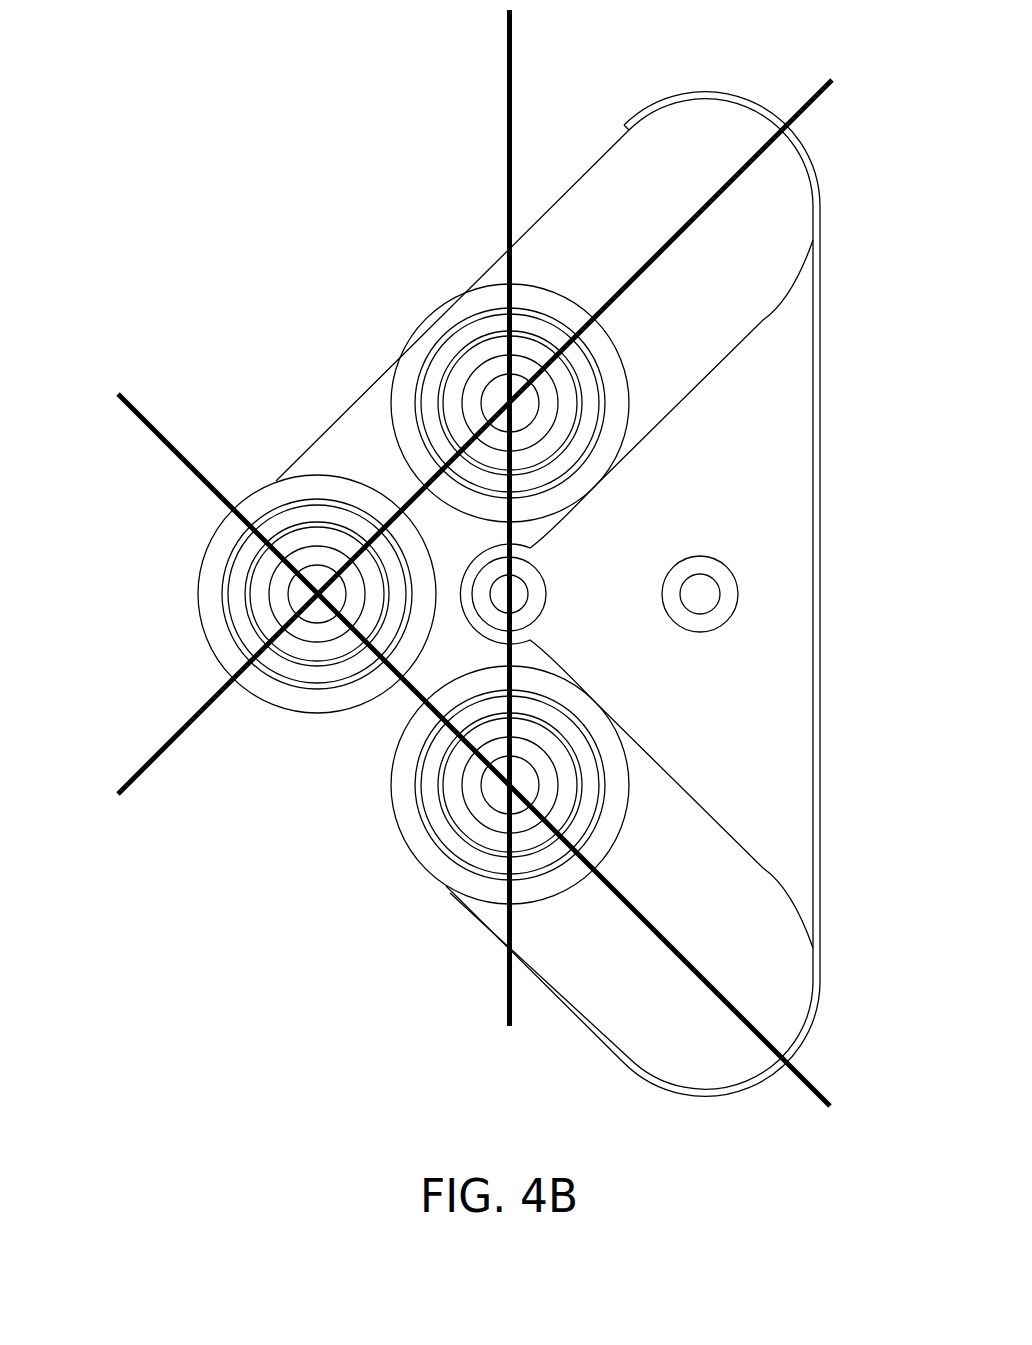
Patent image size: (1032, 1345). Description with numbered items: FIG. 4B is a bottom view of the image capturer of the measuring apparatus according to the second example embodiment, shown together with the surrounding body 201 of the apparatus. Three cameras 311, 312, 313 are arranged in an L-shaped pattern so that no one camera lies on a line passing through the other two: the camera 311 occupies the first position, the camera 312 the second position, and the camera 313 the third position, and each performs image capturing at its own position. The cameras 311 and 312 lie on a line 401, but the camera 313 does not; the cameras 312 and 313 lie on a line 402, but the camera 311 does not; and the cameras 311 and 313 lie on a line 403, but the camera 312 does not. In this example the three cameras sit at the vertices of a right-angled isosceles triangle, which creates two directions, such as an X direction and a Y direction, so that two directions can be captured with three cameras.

The device housing 201 is at (125, 250).
The camera 311 is at (638, 484).
The camera 312 is at (155, 592).
The camera 313 is at (632, 697).
The line 401 is at (138, 766).
The line 402 is at (137, 418).
The line 403 is at (507, 1000).